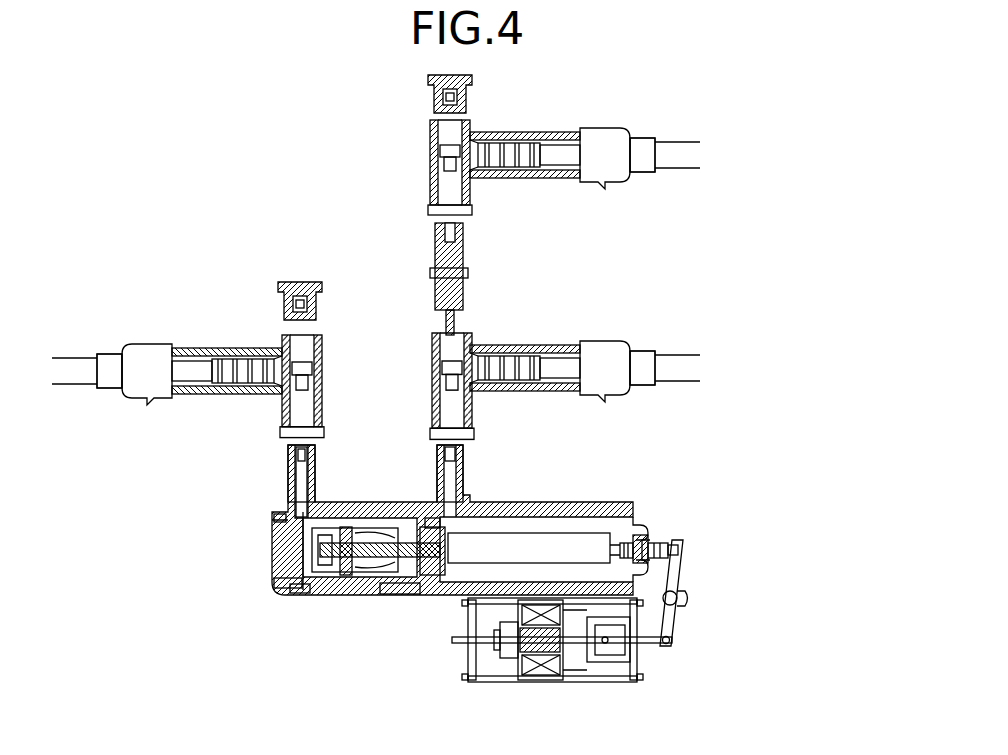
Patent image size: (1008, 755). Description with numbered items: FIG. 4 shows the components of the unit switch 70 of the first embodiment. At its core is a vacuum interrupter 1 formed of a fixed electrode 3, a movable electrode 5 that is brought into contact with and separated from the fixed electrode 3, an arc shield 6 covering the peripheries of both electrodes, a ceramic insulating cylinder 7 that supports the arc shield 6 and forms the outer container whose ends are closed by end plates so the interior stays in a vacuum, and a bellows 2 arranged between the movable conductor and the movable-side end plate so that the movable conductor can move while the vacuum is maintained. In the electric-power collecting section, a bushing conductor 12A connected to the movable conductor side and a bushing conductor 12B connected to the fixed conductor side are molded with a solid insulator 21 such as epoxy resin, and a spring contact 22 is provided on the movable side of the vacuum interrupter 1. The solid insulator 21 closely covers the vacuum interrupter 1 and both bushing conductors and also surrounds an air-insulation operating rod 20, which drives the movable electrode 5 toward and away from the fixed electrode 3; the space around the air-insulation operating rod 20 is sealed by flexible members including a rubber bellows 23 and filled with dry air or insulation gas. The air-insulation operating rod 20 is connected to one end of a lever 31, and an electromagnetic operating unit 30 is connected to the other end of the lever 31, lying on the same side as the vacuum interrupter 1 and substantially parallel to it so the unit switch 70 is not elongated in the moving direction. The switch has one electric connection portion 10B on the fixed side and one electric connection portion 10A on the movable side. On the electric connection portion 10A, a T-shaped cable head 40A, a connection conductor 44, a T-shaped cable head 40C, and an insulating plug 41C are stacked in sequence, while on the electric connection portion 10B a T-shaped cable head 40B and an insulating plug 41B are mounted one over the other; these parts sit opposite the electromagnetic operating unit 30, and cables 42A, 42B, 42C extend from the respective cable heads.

The vacuum interrupter 1 is at (483, 571).
The bellows 2 is at (347, 597).
The fixed electrode 3 is at (270, 576).
The movable electrode 5 is at (297, 593).
The arc shield 6 is at (272, 520).
The ceramic insulating cylinder 7 is at (290, 478).
The electric connection portion 10A is at (432, 452).
The electric connection portion 10B is at (410, 465).
The bushing conductor 12A is at (463, 480).
The bushing conductor 12B is at (297, 477).
The air-insulation operating rod 20 is at (527, 535).
The solid insulator 21 is at (648, 518).
The spring contact 22 is at (397, 597).
The rubber bellows 23 is at (655, 530).
The electromagnetic operating unit 30 is at (580, 682).
The lever 31 is at (667, 613).
The T-shaped cable head 40A is at (528, 345).
The T-shaped cable head 40B is at (177, 343).
The T-shaped cable head 40C is at (525, 178).
The insulating plug 41B is at (303, 283).
The insulating plug 41C is at (463, 113).
The first cable 42A is at (640, 347).
The second cable 42B is at (112, 352).
The third cable 42C is at (640, 175).
The connection conductor 44 is at (465, 250).
The unit switch 70 is at (546, 727).